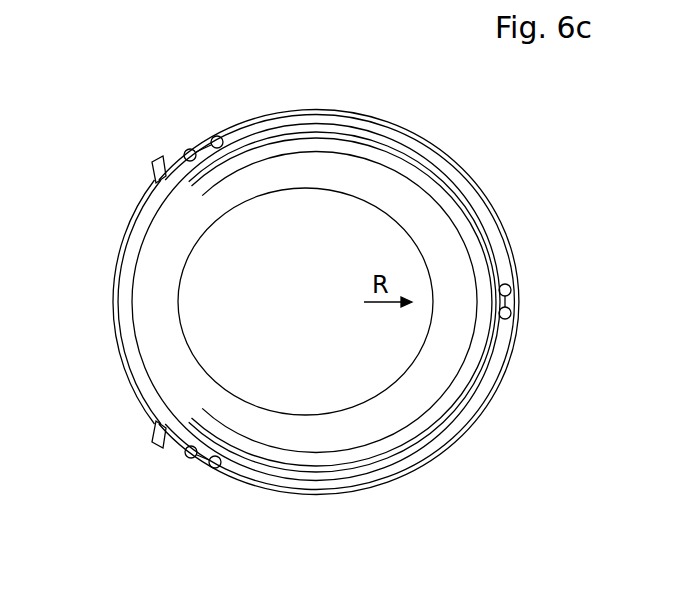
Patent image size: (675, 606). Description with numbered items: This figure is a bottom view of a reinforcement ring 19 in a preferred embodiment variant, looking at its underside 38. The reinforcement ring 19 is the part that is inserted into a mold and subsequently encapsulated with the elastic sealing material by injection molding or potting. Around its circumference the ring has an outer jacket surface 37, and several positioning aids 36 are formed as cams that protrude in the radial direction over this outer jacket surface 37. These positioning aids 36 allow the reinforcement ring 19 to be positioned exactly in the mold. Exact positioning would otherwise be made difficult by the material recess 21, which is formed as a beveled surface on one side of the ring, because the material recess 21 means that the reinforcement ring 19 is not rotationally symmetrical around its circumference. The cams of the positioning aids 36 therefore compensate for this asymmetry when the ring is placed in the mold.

The reinforcement ring 19 is at (402, 112).
The material recess 21 is at (115, 390).
The positioning aids 36 is at (193, 149).
The outer jacket surface 37 is at (240, 137).
The underside 38 is at (153, 301).